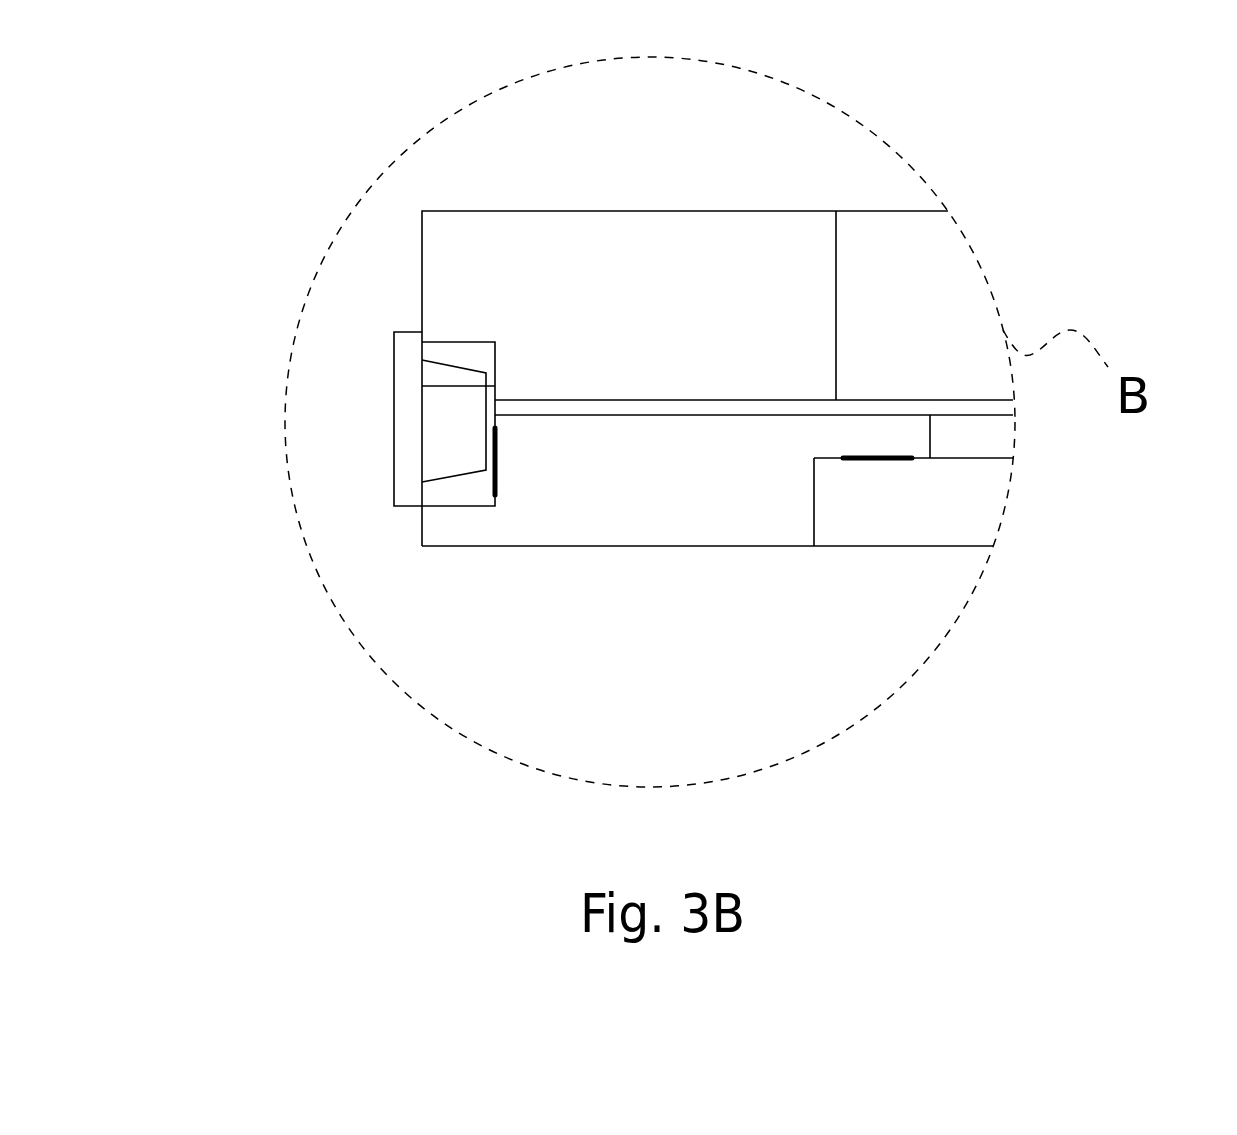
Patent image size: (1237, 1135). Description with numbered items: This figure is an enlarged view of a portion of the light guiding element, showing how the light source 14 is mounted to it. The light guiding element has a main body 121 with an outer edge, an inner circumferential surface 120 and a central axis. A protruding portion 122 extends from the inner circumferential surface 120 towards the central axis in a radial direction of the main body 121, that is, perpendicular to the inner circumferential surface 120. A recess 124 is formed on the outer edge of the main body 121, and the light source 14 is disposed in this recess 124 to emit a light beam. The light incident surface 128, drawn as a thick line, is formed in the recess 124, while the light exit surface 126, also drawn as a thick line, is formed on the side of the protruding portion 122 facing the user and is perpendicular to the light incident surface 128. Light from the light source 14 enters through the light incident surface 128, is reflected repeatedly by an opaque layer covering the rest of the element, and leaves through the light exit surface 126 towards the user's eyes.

The light source 14 is at (450, 416).
The inner circumferential surface 120 is at (814, 503).
The main body 121 is at (662, 487).
The protruding portion 122 is at (913, 437).
The recess 124 is at (452, 492).
The light exit surface 126 is at (877, 462).
The light incident surface 128 is at (497, 480).